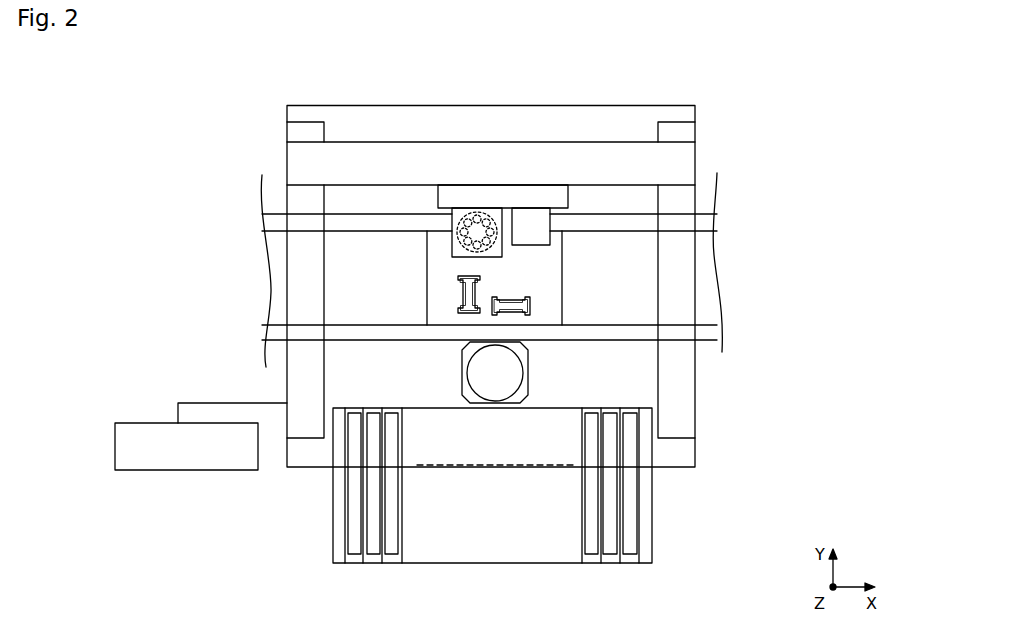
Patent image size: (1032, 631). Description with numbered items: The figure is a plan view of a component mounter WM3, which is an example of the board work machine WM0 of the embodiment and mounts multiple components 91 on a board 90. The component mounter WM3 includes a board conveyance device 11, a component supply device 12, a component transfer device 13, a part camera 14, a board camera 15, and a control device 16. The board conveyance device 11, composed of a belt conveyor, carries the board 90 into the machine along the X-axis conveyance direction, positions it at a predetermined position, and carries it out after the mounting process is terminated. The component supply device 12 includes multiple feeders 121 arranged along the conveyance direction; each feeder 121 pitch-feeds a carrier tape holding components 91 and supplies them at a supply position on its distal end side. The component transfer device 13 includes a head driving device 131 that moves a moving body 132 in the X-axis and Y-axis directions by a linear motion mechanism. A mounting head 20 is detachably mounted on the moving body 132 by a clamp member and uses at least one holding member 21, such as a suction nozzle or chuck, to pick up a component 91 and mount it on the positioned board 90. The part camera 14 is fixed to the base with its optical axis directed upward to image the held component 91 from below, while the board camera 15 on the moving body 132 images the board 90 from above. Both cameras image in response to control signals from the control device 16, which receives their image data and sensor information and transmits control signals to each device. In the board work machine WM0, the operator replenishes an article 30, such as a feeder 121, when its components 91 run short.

The board conveyance device 11 is at (338, 293).
The component supply device 12 is at (500, 512).
The component transfer device 13 is at (447, 277).
The part camera 14 is at (457, 355).
The board camera 15 is at (535, 225).
The control device 16 is at (182, 470).
The mounting head 20 is at (428, 159).
The holding member 21 is at (441, 232).
The article 30 is at (355, 480).
The board 90 is at (370, 252).
The component 91 is at (477, 288).
The feeder 121 is at (500, 485).
The head driving device 131 is at (687, 153).
The moving body 132 is at (530, 197).
The board work machine WM0 is at (591, 213).
The component mounter WM3 is at (491, 270).